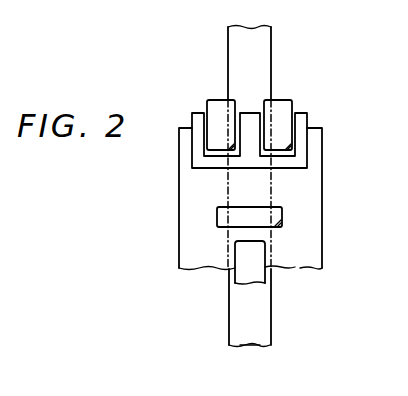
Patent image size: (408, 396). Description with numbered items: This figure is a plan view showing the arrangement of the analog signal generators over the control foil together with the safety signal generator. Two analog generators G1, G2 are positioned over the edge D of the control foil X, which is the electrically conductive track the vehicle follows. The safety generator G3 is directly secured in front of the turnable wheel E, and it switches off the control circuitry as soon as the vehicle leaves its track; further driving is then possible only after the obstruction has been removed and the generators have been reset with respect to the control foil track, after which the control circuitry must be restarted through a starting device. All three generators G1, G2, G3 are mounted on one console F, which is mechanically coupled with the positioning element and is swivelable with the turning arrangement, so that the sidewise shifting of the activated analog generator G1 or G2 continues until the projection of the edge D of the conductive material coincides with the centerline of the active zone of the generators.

The edge of the control foil D is at (221, 326).
The control foil X is at (244, 337).
The console F is at (305, 186).
The analog generator G1 is at (199, 97).
The analog generator G2 is at (284, 98).
The safety generator G3 is at (209, 206).
The turnable wheel E is at (230, 264).